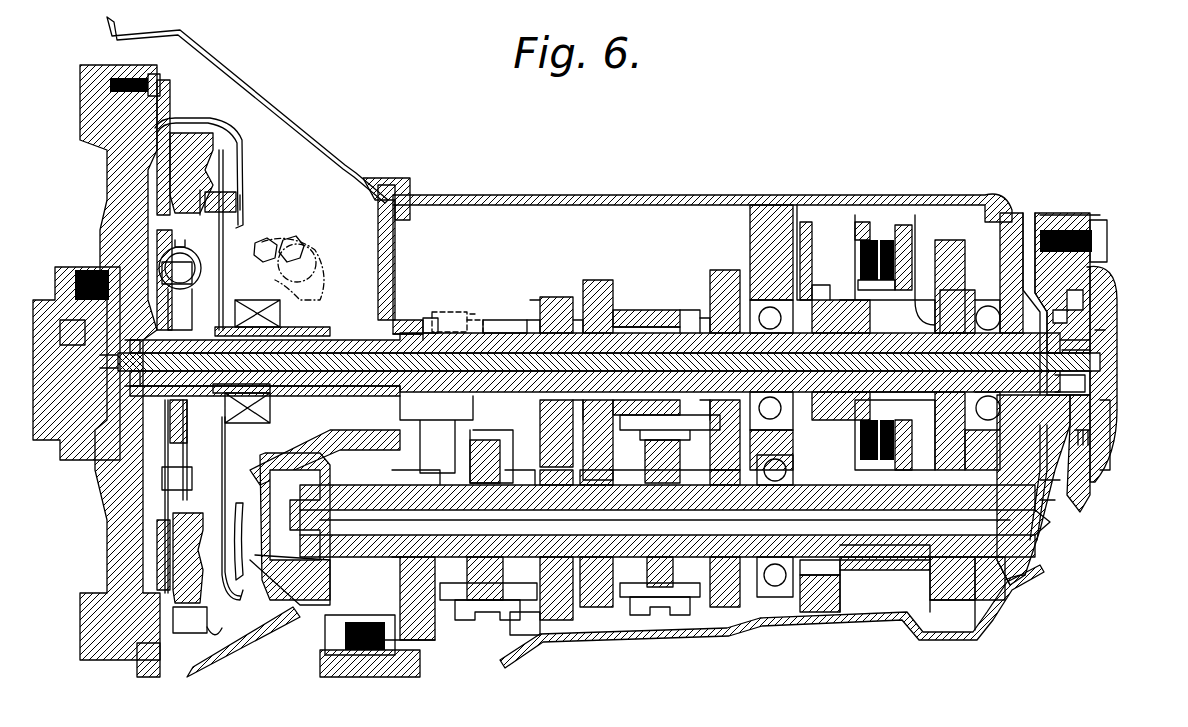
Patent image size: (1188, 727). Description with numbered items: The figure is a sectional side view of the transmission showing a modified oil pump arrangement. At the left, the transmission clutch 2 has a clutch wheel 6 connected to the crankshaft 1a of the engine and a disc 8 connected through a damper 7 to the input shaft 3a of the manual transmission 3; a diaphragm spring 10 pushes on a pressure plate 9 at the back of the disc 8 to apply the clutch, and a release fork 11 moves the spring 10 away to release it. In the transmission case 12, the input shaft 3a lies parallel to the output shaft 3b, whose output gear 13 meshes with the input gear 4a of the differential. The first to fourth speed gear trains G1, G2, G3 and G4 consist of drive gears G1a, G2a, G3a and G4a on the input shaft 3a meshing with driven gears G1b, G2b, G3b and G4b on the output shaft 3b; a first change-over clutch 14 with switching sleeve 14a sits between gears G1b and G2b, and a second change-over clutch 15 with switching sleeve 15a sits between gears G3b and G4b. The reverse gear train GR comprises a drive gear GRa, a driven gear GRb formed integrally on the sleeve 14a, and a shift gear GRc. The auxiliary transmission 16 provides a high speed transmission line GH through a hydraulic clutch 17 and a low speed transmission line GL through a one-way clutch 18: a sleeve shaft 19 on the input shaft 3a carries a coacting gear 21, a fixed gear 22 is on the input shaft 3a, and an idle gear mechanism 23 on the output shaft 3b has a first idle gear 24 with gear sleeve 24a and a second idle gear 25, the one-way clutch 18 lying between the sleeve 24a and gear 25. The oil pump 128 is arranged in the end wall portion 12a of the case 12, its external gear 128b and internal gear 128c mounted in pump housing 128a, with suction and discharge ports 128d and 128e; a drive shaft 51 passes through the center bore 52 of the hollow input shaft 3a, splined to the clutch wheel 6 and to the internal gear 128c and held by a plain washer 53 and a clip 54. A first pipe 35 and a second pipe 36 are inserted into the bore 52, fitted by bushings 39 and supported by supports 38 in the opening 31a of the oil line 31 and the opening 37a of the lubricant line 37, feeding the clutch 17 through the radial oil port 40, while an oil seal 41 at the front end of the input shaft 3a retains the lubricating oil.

The crankshaft 1a is at (56, 460).
The transmission clutch 2 is at (216, 118).
The manual transmission 3 is at (608, 262).
The input shaft 3a is at (465, 394).
The output shaft 3b is at (432, 592).
The input gear 4a is at (322, 611).
The clutch wheel 6 is at (112, 168).
The damper 7 is at (150, 265).
The disc 8 is at (160, 212).
The pressure plate 9 is at (188, 203).
The diaphragm spring 10 is at (220, 258).
The release fork 11 is at (322, 292).
The transmission case 12 is at (550, 196).
The end wall portion 12a is at (1085, 445).
The output gear 13 is at (355, 470).
The first change-over clutch 14 is at (482, 620).
The switching sleeve 14a is at (508, 621).
The second change-over clutch 15 is at (642, 600).
The switching sleeve 15a is at (680, 612).
The auxiliary transmission 16 is at (860, 240).
The hydraulic clutch 17 is at (877, 243).
The one-way clutch 18 is at (950, 588).
The sleeve shaft 19 is at (665, 312).
The coacting gear 21 is at (812, 285).
The fixed gear 22 is at (950, 289).
The idle gear mechanism 23 is at (884, 592).
The first idle gear 24 is at (830, 602).
The gear sleeve 24a is at (862, 562).
The second idle gear 25 is at (985, 609).
The oil line 31 is at (1004, 212).
The opening 31a is at (1050, 490).
The first pipe 35 is at (955, 470).
The second pipe 36 is at (937, 295).
The lubricant line 37 is at (1030, 560).
The opening 37a is at (1090, 375).
The supports 38 is at (1072, 338).
The bushings 39 is at (815, 376).
The radial oil port 40 is at (842, 300).
The oil seal 41 is at (130, 392).
The drive shaft 51 is at (960, 364).
The center bore 52 is at (690, 414).
The plain washer 53 is at (1097, 333).
The clip 54 is at (1100, 346).
The oil pump 128 is at (1092, 298).
The pump housing 128a is at (1053, 229).
The external gear 128b is at (1098, 220).
The internal gear 128c is at (1098, 415).
The suction port 128d is at (1082, 500).
The discharge port 128e is at (1033, 212).
The first speed gear train G1 is at (418, 321).
The drive gear G1a is at (432, 318).
The driven gear G1b is at (421, 642).
The second speed gear train G2 is at (554, 298).
The drive gear G2a is at (540, 298).
The driven gear G2b is at (565, 620).
The third speed gear train G3 is at (609, 276).
The drive gear G3a is at (614, 289).
The driven gear G3b is at (598, 605).
The fourth speed gear train G4 is at (725, 269).
The drive gear G4a is at (716, 270).
The driven gear G4b is at (728, 605).
The reverse gear train GR is at (508, 300).
The drive gear GRa is at (490, 320).
The driven gear GRb is at (522, 636).
The shift gear GRc is at (450, 298).
The high speed transmission line GH is at (832, 298).
The low speed transmission line GL is at (675, 521).